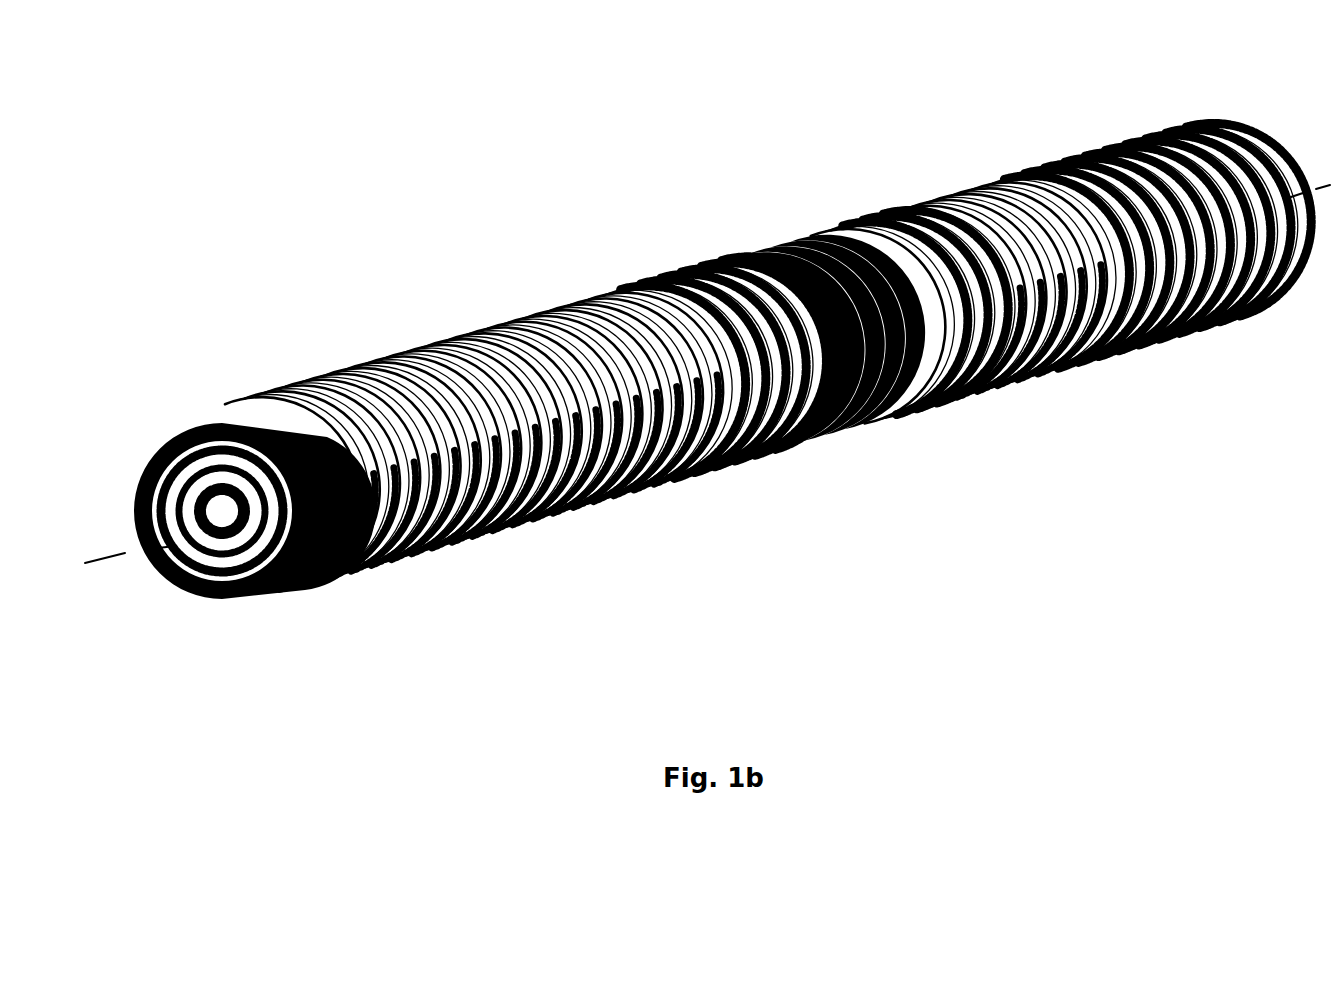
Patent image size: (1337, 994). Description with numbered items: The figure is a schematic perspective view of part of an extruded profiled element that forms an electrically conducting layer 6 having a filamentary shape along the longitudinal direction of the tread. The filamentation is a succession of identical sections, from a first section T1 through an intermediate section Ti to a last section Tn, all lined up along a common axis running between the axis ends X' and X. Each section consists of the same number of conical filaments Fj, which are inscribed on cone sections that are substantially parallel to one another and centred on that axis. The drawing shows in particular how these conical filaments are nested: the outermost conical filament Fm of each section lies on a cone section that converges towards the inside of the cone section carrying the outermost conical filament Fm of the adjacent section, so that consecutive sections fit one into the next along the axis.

The electrically conducting layer 6 is at (465, 313).
The first section T1 is at (178, 425).
The section Ti is at (740, 250).
The last section Tn is at (1212, 128).
The outermost conical filament Fm is at (300, 590).
The conical filament Fj is at (230, 598).
The axis end X is at (1309, 183).
The axis end X' is at (130, 548).